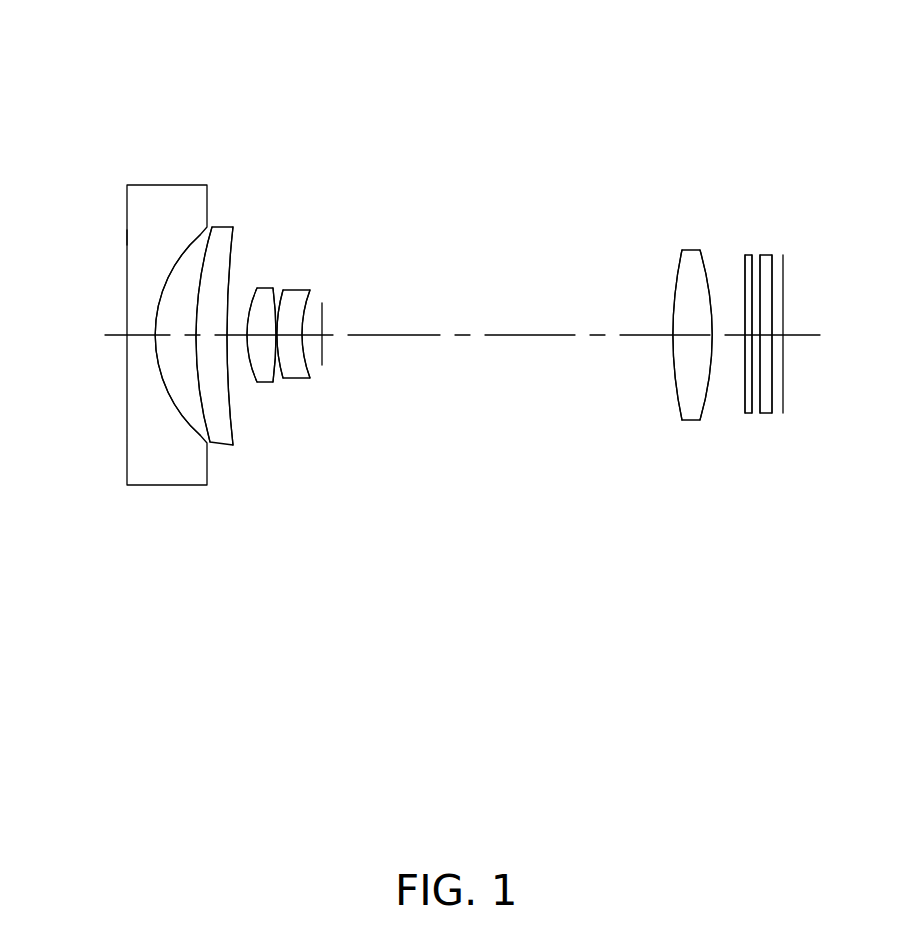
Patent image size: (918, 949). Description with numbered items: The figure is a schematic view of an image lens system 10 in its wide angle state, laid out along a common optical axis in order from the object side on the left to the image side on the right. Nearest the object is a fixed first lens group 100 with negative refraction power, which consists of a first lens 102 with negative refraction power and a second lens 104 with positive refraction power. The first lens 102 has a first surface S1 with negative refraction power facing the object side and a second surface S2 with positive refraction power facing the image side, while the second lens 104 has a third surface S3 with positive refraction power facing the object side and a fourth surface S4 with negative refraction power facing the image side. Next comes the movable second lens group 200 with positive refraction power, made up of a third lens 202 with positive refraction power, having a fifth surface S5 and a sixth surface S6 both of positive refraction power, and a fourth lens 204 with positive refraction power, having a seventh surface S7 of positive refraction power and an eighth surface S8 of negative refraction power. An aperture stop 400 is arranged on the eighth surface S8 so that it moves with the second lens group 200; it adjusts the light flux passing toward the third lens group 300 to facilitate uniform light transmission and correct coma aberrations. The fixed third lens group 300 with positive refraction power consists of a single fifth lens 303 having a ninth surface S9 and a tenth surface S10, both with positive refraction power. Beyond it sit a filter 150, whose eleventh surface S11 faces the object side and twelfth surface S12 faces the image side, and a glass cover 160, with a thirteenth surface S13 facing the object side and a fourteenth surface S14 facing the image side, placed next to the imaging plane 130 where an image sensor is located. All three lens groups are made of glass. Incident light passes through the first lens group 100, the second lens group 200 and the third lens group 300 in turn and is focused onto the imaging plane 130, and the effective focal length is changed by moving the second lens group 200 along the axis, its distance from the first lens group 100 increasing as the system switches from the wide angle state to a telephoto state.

The image lens system 10 is at (476, 39).
The first lens group 100 is at (250, 100).
The first lens 102 is at (167, 183).
The second lens 104 is at (223, 225).
The second lens group 200 is at (362, 210).
The third lens 202 is at (260, 288).
The fourth lens 204 is at (298, 290).
The aperture stop 400 is at (325, 314).
The third lens group 300 is at (692, 318).
The fifth lens 303 is at (687, 270).
The filter 150 is at (749, 262).
The glass cover 160 is at (767, 270).
The imaging plane 130 is at (783, 297).
The first surface S1 is at (127, 242).
The second surface S2 is at (162, 292).
The third surface S3 is at (197, 371).
The fourth surface S4 is at (230, 403).
The fifth surface S5 is at (250, 367).
The sixth surface S6 is at (277, 367).
The seventh surface S7 is at (280, 357).
The eighth surface S8 is at (313, 362).
The ninth surface S9 is at (675, 372).
The tenth surface S10 is at (700, 398).
The eleventh surface S11 is at (747, 397).
The twelfth surface S12 is at (752, 407).
The thirteenth surface S13 is at (762, 372).
The fourteenth surface S14 is at (772, 390).